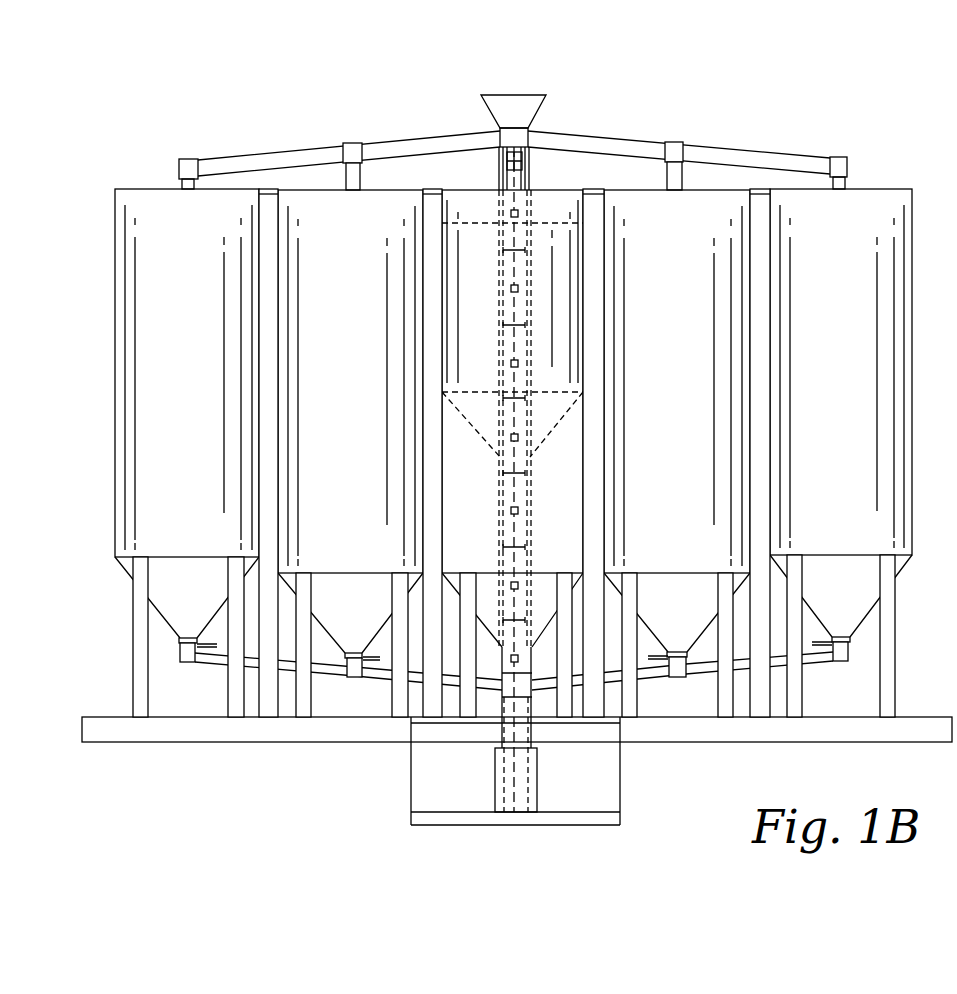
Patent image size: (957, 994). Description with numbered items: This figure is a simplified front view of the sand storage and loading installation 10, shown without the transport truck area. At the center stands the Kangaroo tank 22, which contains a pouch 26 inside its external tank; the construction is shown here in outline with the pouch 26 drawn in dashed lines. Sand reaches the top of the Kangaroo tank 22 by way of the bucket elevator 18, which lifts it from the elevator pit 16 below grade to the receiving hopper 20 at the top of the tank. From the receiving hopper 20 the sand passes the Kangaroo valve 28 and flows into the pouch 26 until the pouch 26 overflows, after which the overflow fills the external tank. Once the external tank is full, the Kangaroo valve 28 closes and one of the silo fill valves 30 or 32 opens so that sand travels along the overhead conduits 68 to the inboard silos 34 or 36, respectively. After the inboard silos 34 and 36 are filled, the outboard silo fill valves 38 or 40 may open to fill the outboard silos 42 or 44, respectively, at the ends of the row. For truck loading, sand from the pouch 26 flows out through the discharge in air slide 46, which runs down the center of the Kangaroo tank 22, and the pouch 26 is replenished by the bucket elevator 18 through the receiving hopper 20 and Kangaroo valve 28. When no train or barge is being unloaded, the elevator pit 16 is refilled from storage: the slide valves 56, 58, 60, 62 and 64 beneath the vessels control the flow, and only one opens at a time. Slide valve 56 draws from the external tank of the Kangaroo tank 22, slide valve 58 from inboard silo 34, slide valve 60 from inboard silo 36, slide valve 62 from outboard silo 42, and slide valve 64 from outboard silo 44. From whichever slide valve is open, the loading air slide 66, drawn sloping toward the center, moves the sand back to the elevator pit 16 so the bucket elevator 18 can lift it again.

The material handling system 10 is at (817, 87).
The elevator pit 16 is at (516, 805).
The bucket elevator 18 is at (532, 502).
The receiving hopper 20 is at (518, 95).
The Kangaroo tank 22 is at (574, 540).
The pouch 26 is at (473, 427).
The Kangaroo valve 28 is at (528, 140).
The silo fill valve 30 is at (347, 143).
The silo fill valve 32 is at (673, 142).
The inboard silo 34 is at (361, 369).
The inboard silo 36 is at (693, 369).
The outboard silo fill valve 38 is at (185, 159).
The outboard silo fill valve 40 is at (838, 157).
The outboard silo 42 is at (199, 369).
The outboard silo 44 is at (856, 369).
The discharge in air slide 46 is at (512, 480).
The slide valve 56 is at (507, 687).
The slide valve 58 is at (355, 678).
The slide valve 60 is at (675, 678).
The slide valve 62 is at (192, 665).
The slide valve 64 is at (838, 662).
The loading air slide 66 is at (252, 667).
The overhead conduit 68 is at (272, 153).